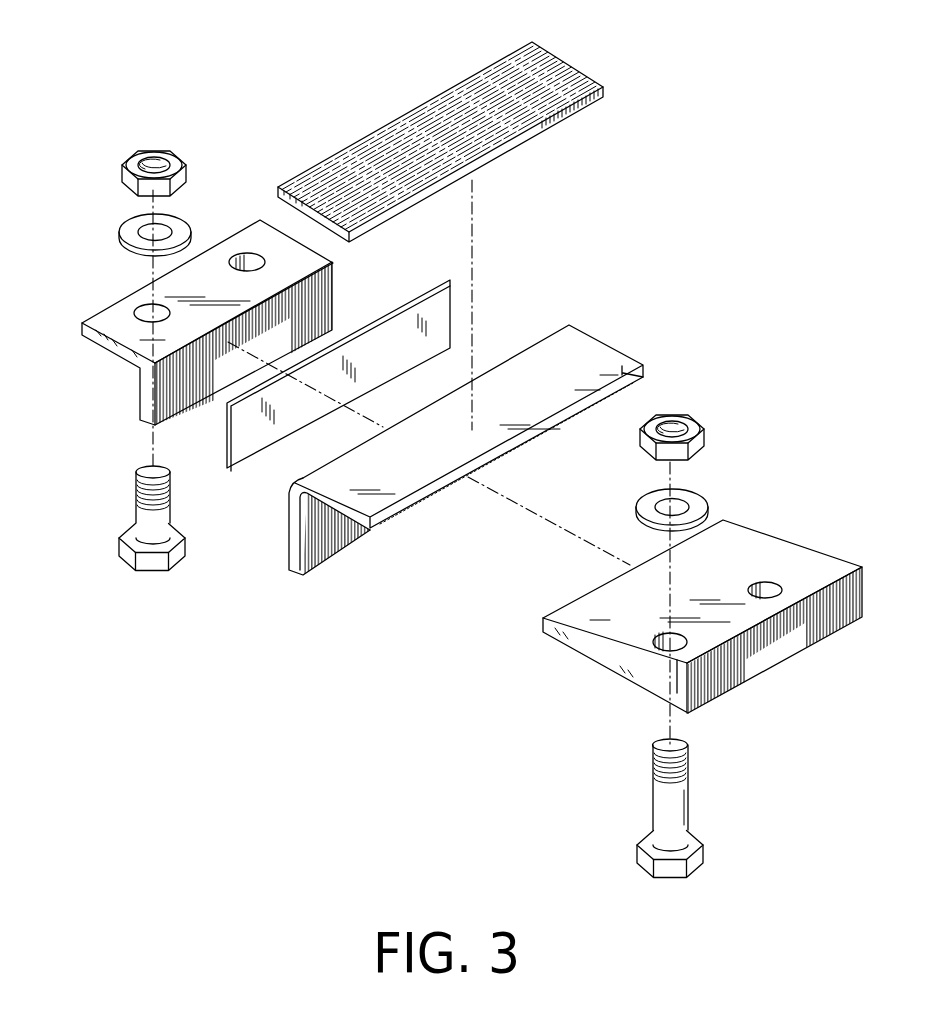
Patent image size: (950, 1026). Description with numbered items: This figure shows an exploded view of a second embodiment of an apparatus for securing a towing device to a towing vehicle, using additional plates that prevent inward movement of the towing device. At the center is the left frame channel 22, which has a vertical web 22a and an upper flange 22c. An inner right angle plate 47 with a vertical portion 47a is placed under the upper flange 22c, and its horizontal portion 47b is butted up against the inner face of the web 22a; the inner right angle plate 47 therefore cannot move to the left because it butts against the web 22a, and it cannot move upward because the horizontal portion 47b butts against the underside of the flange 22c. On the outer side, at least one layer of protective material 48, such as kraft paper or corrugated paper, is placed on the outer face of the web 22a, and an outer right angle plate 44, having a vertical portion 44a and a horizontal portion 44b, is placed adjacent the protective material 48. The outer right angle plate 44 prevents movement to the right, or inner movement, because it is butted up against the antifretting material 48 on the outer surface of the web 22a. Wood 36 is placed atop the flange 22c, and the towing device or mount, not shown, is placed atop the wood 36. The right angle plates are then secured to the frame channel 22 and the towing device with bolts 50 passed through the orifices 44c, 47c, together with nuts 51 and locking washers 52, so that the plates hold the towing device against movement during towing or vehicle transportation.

The left frame channel 22 is at (466, 439).
The web 22a is at (287, 552).
The upper flange 22c is at (621, 388).
The wood 36 is at (447, 87).
The outer right angle plate 44 is at (214, 297).
The vertical portion of outer right angle plate 44a is at (334, 292).
The horizontal portion of outer right angle plate 44b is at (116, 352).
The orifice 44c is at (250, 253).
The inner right angle plate 47 is at (703, 597).
The vertical portion 47a is at (835, 575).
The horizontal portion 47b is at (605, 660).
The orifice 47c is at (767, 587).
The protective material 48 is at (428, 290).
The bolt 50 is at (133, 497).
The nut 51 is at (123, 163).
The locking washer 52 is at (118, 231).